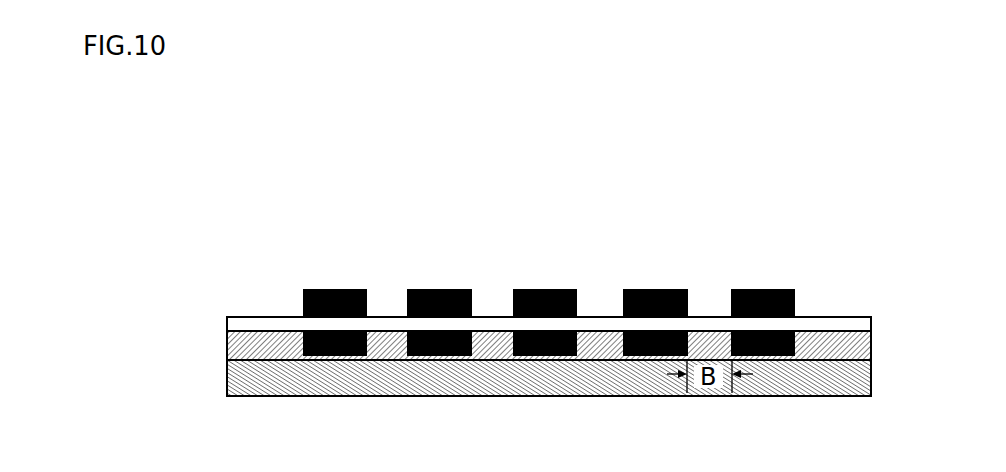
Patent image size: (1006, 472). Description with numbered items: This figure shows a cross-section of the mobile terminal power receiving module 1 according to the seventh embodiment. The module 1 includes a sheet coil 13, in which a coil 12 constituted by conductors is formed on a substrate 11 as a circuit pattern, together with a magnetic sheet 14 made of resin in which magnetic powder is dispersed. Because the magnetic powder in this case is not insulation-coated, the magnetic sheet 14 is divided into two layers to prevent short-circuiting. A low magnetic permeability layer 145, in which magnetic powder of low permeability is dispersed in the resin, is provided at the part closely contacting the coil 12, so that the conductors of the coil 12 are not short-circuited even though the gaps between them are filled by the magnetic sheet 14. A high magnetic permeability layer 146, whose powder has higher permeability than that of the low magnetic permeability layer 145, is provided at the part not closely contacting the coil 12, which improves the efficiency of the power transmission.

The mobile terminal power receiving module 1 is at (616, 334).
The substrate 11 is at (842, 325).
The coil 12 is at (796, 298).
The sheet coil 13 is at (597, 299).
The magnetic sheet 14 is at (597, 378).
The low magnetic permeability layer 145 is at (848, 352).
The high magnetic permeability layer 146 is at (853, 382).